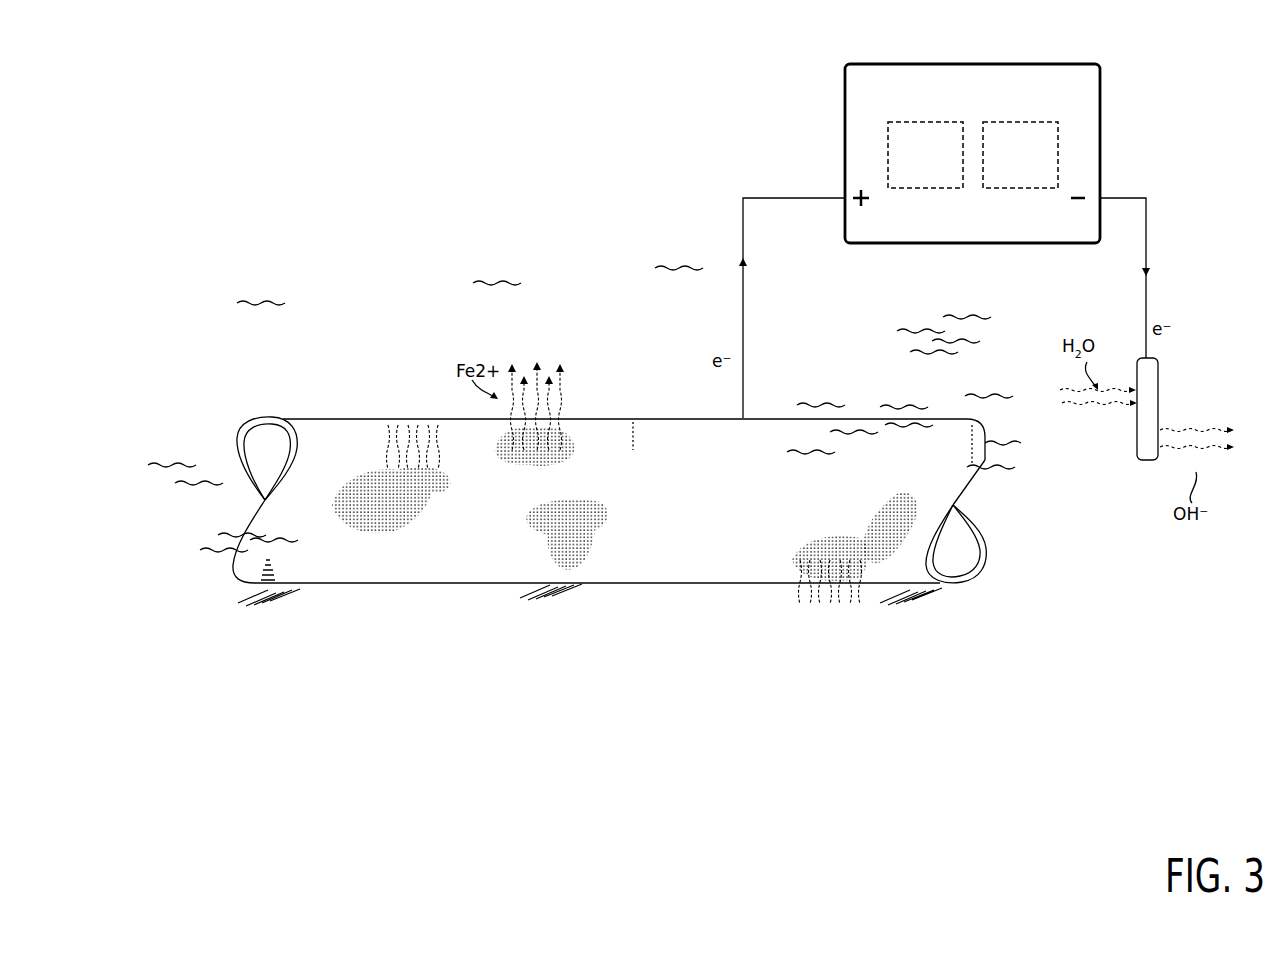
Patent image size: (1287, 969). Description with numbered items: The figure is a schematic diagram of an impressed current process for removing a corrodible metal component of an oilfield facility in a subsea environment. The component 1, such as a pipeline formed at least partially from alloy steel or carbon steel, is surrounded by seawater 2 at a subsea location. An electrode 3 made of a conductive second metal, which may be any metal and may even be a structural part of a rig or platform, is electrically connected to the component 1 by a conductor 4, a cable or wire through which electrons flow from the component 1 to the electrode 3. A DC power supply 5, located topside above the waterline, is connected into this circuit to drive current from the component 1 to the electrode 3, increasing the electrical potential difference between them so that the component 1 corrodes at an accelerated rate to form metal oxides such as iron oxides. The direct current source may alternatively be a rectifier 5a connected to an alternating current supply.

The component 1 is at (692, 541).
The seawater 2 is at (905, 367).
The electrode 3 is at (1152, 405).
The conductor 4 is at (797, 198).
The DC power supply 5 is at (977, 103).
The rectifier 5a is at (939, 165).